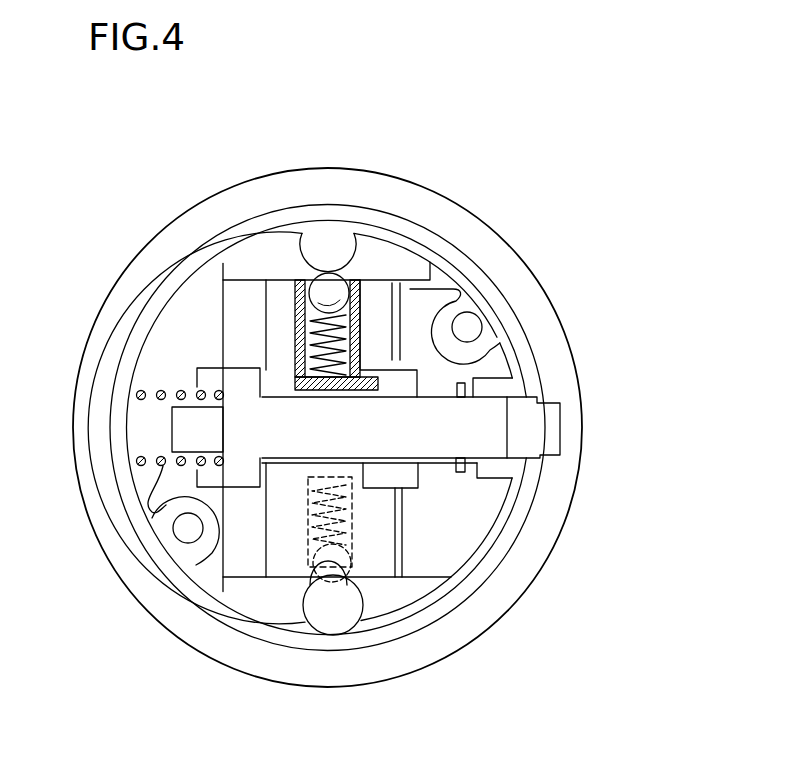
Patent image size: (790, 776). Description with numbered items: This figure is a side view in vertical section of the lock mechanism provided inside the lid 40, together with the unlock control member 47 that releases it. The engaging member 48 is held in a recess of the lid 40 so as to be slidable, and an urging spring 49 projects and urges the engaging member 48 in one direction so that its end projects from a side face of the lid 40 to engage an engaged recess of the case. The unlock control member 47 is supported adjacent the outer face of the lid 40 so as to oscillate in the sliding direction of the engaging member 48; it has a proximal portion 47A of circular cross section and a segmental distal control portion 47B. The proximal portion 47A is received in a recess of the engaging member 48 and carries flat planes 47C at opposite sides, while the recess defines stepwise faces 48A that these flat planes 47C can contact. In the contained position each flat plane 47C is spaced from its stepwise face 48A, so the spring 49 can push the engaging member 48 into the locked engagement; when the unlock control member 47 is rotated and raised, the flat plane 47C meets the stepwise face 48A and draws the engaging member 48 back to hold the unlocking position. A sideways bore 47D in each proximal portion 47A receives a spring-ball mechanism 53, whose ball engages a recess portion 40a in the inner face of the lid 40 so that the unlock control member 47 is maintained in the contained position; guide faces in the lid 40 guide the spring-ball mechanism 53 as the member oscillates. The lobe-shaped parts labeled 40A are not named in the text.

The lid 40 is at (557, 337).
The recess portion 40a is at (312, 277).
The lobe arms of ring 40A is at (410, 289).
The unlock control member 47 is at (345, 369).
The proximal portion 47A is at (372, 295).
The distal control portion 47B is at (232, 298).
The flat plane 47C is at (358, 390).
The sideways bore 47D is at (297, 345).
The engaging member 48 is at (548, 432).
The stepwise face 48A is at (264, 389).
The urging spring 49 is at (150, 492).
The spring-ball mechanism 53 is at (335, 268).